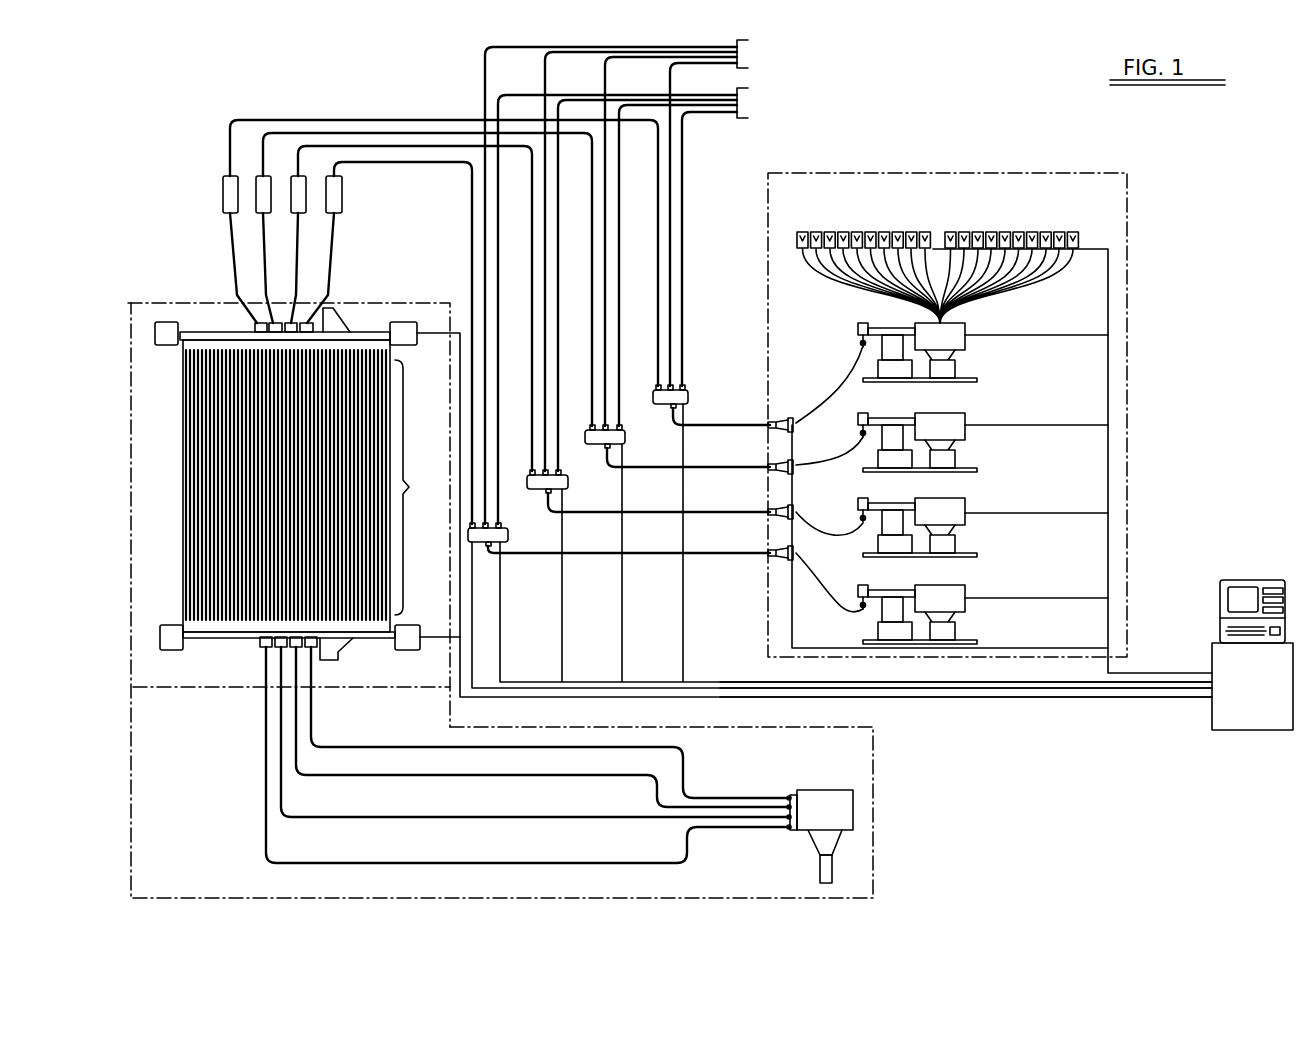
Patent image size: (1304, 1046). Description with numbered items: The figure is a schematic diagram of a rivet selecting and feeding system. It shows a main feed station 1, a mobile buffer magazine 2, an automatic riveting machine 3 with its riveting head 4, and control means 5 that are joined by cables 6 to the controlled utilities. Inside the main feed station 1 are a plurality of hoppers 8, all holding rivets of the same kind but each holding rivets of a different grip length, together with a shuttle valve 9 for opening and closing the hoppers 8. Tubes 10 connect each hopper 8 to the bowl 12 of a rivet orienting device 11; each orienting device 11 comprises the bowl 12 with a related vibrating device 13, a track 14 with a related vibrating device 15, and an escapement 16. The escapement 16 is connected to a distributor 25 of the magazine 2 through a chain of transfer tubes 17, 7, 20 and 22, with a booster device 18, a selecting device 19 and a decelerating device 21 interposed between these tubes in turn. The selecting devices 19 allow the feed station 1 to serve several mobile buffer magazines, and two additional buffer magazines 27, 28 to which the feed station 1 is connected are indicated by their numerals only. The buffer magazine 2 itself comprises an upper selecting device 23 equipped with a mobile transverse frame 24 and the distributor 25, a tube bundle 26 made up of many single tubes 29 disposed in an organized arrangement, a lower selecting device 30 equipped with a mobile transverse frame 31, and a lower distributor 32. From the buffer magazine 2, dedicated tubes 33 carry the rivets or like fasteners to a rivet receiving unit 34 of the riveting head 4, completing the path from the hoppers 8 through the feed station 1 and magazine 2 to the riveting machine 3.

The main feed station 1 is at (1128, 203).
The mobile buffer magazine 2 is at (177, 688).
The automatic riveting machine 3 is at (137, 838).
The riveting head 4 is at (853, 812).
The control means 5 is at (1252, 730).
The cables 6 is at (970, 700).
The rivet transporting tube 7 is at (722, 425).
The hopper 8 is at (1073, 232).
The shuttle valve 9 is at (803, 250).
The tube 10 is at (830, 290).
The rivet orienting device 11 is at (977, 380).
The bowl 12 is at (965, 331).
The vibrating device 13 is at (955, 366).
The track 14 is at (888, 330).
The vibrating device 15 is at (898, 373).
The escapement 16 is at (856, 334).
The transfer tube 17 is at (832, 396).
The booster device 18 is at (790, 416).
The selecting device 19 is at (688, 393).
The rivet transporting tube 20 is at (417, 160).
The decelerating device 21 is at (227, 198).
The rivet transporting tube 22 is at (233, 262).
The upper selecting device 23 is at (165, 333).
The mobile transverse frame 24 is at (338, 318).
The distributor 25 is at (255, 325).
The tube bundle 26 is at (311, 485).
The additional buffer magazine 27 is at (748, 103).
The additional buffer magazine 28 is at (748, 53).
The single tube 29 is at (152, 527).
The lower selecting device 30 is at (172, 638).
The mobile transverse frame 31 is at (342, 652).
The distributor 32 is at (262, 642).
The tube 33 is at (375, 745).
The rivet receiving unit 34 is at (790, 800).